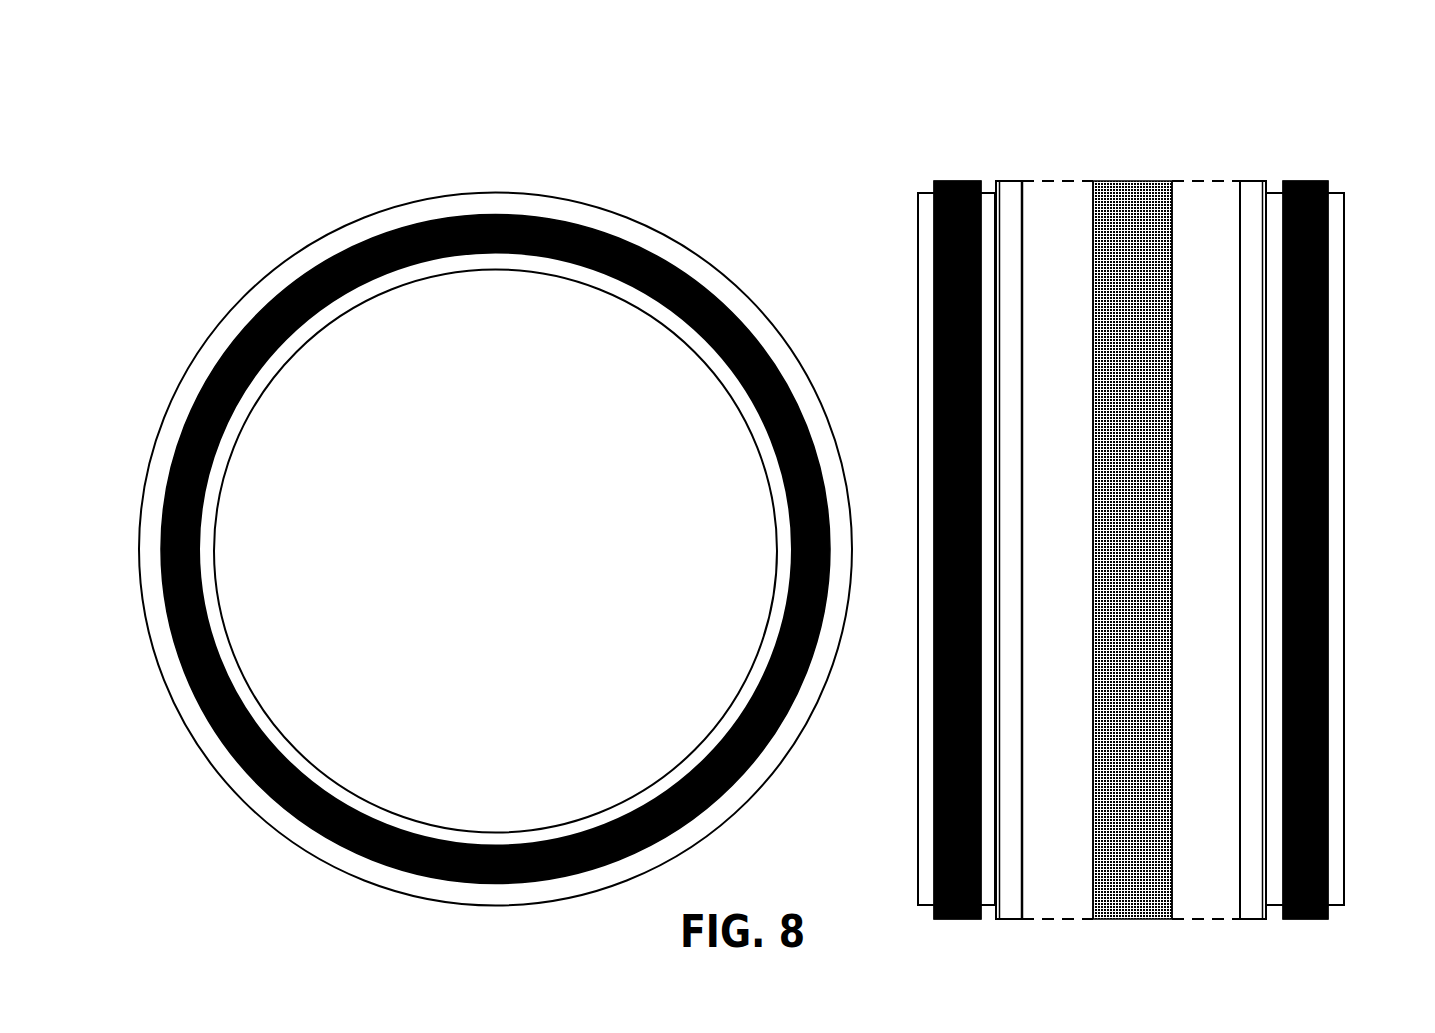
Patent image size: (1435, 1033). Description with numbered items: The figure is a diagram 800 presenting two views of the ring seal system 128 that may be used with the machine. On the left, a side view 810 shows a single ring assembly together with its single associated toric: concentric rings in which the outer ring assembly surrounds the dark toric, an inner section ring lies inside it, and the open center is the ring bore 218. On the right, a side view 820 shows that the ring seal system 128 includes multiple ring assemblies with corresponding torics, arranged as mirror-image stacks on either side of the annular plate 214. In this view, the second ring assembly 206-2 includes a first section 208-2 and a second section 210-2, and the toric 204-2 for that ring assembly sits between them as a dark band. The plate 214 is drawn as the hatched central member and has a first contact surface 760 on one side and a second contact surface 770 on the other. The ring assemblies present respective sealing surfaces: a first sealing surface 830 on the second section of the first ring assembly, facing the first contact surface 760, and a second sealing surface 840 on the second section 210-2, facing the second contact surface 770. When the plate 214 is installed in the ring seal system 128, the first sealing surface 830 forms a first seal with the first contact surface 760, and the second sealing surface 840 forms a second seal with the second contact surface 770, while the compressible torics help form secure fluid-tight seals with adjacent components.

The diagram 800 is at (247, 52).
The side view 810 is at (226, 136).
The side view 820 is at (852, 101).
The ring seal system 128 is at (771, 478).
The toric 204-2 is at (1322, 181).
The ring assembly 206-2 is at (1353, 437).
The first section 208-2 is at (1343, 200).
The second section 210-2 is at (1255, 181).
The plate 214 is at (1136, 181).
The ring bore 218 is at (514, 554).
The first contact surface 760 is at (1093, 347).
The second contact surface 770 is at (1172, 403).
The first sealing surface 830 is at (1022, 438).
The second sealing surface 840 is at (1240, 507).